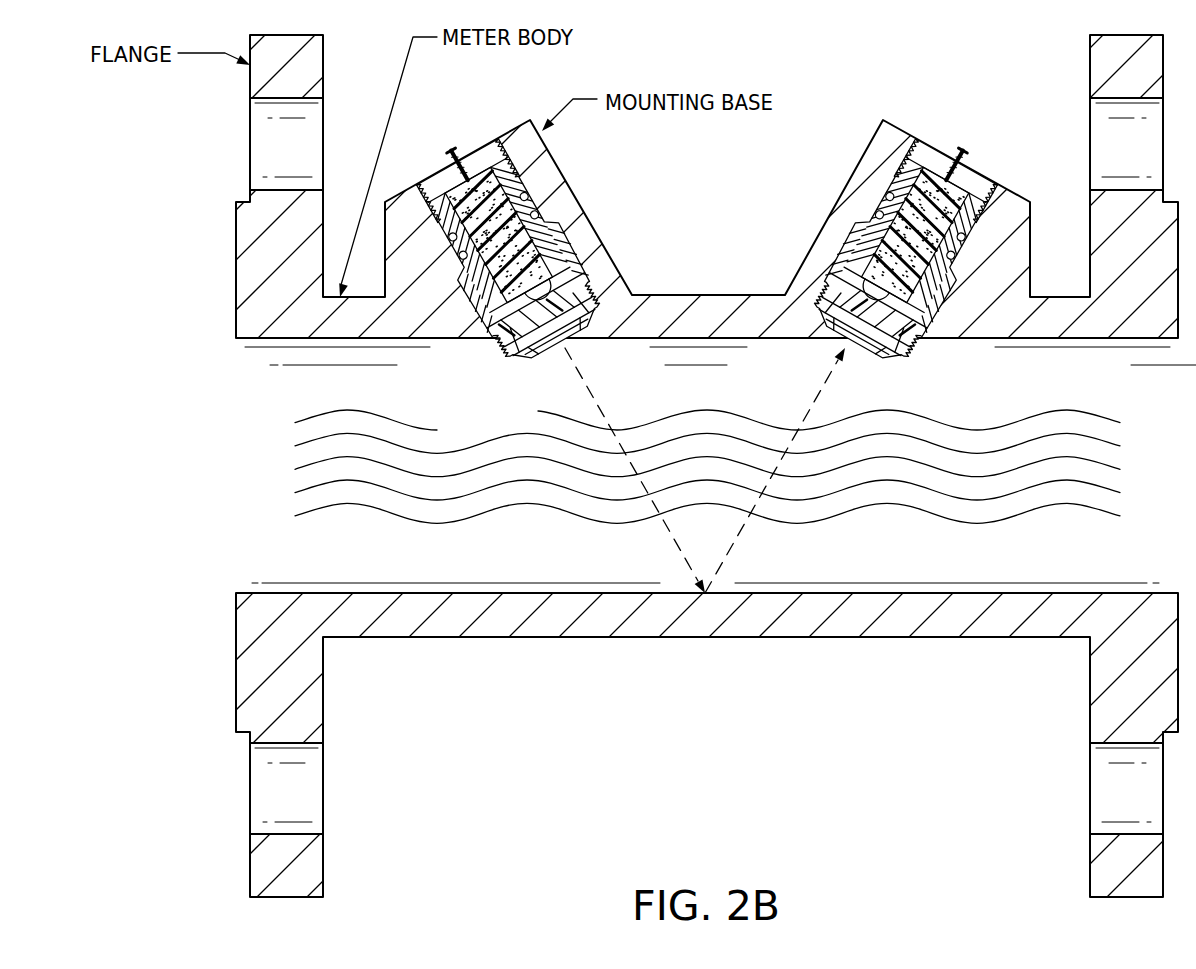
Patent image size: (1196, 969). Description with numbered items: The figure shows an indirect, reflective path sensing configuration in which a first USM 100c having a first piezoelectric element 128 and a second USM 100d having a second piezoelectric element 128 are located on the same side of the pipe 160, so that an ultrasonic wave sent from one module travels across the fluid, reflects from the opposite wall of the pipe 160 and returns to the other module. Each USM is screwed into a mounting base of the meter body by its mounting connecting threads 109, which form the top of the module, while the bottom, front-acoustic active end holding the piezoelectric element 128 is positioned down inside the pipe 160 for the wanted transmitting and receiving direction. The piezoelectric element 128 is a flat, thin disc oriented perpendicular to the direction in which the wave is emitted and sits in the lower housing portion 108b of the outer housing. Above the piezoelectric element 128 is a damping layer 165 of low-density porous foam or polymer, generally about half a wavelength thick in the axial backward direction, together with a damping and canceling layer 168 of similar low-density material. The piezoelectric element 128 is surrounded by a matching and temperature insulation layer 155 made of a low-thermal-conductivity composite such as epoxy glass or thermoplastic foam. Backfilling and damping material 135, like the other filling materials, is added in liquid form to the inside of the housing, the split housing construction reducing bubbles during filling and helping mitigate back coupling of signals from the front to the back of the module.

The first USM 100c is at (441, 288).
The second USM 100d is at (990, 230).
The lower housing portion 108b is at (481, 356).
The mounting connecting threads 109 is at (512, 152).
The piezoelectric element 128 is at (784, 297).
The backfilling and damping material 135 is at (460, 176).
The matching and temperature insulation layer 155 is at (575, 334).
The pipe 160 is at (1070, 307).
The damping layer 165 is at (538, 349).
The damping and canceling layer 168 is at (549, 236).